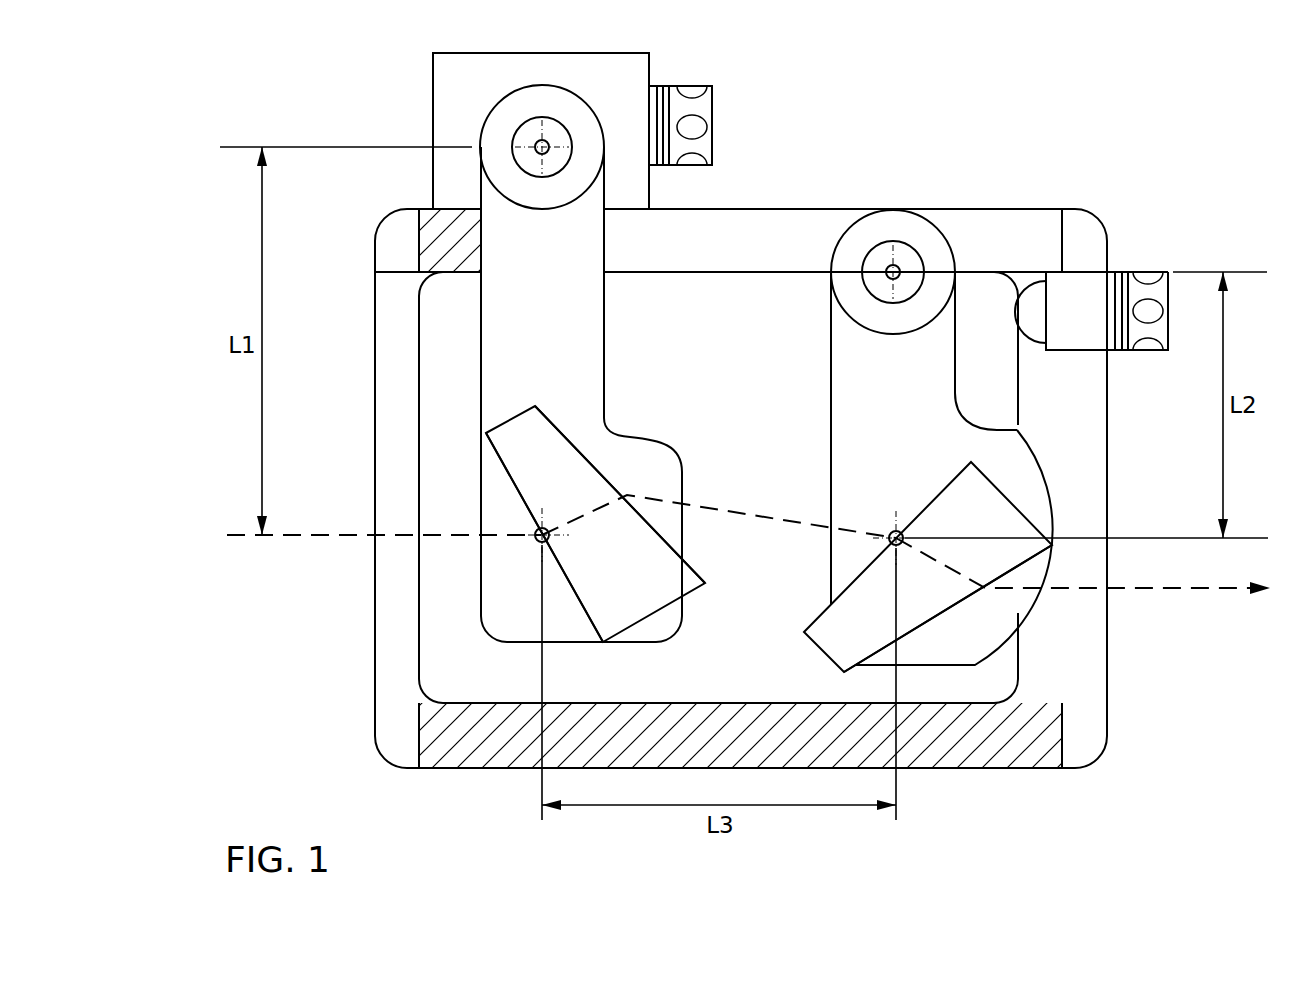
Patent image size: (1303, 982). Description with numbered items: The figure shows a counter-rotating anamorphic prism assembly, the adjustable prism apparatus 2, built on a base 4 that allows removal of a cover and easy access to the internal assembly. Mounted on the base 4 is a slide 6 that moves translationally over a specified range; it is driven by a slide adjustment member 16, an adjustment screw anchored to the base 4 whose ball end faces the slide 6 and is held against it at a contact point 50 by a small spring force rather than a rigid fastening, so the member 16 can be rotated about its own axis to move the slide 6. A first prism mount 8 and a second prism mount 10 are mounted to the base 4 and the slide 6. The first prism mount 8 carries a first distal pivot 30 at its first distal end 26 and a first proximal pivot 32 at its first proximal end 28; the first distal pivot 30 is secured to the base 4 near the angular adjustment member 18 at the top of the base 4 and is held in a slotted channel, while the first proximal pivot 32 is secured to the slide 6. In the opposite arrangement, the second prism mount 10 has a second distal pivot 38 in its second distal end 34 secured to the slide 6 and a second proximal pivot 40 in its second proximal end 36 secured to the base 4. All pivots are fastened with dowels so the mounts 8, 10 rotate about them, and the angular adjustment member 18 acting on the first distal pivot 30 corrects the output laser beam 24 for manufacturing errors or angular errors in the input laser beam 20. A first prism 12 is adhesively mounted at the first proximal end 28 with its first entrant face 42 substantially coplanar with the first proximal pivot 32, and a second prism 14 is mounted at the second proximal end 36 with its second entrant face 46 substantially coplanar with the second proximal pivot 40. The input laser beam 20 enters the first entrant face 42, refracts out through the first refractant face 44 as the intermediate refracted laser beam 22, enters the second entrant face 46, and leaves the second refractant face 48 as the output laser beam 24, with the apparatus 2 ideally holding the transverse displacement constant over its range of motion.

The adjustable prism apparatus 2 is at (1126, 98).
The base 4 is at (984, 209).
The slide 6 is at (419, 313).
The first prism mount 8 is at (482, 384).
The second prism mount 10 is at (955, 393).
The first prism 12 is at (500, 462).
The second prism 14 is at (1013, 502).
The slide adjustment member 16 is at (1145, 272).
The angular adjustment member 18 is at (713, 104).
The input laser beam 20 is at (281, 540).
The intermediate refracted laser beam 22 is at (770, 518).
The output laser beam 24 is at (1205, 590).
The first distal end 26 is at (575, 94).
The first proximal end 28 is at (481, 612).
The first distal pivot 30 is at (537, 142).
The first proximal pivot 32 is at (538, 540).
The second distal end 34 is at (922, 214).
The second proximal end 36 is at (957, 653).
The second distal pivot 38 is at (888, 266).
The second proximal pivot 40 is at (1012, 653).
The first entrant face 42 is at (585, 586).
The first refractant face 44 is at (542, 473).
The second entrant face 46 is at (942, 521).
The second refractant face 48 is at (905, 611).
The contact point 50 is at (1020, 300).